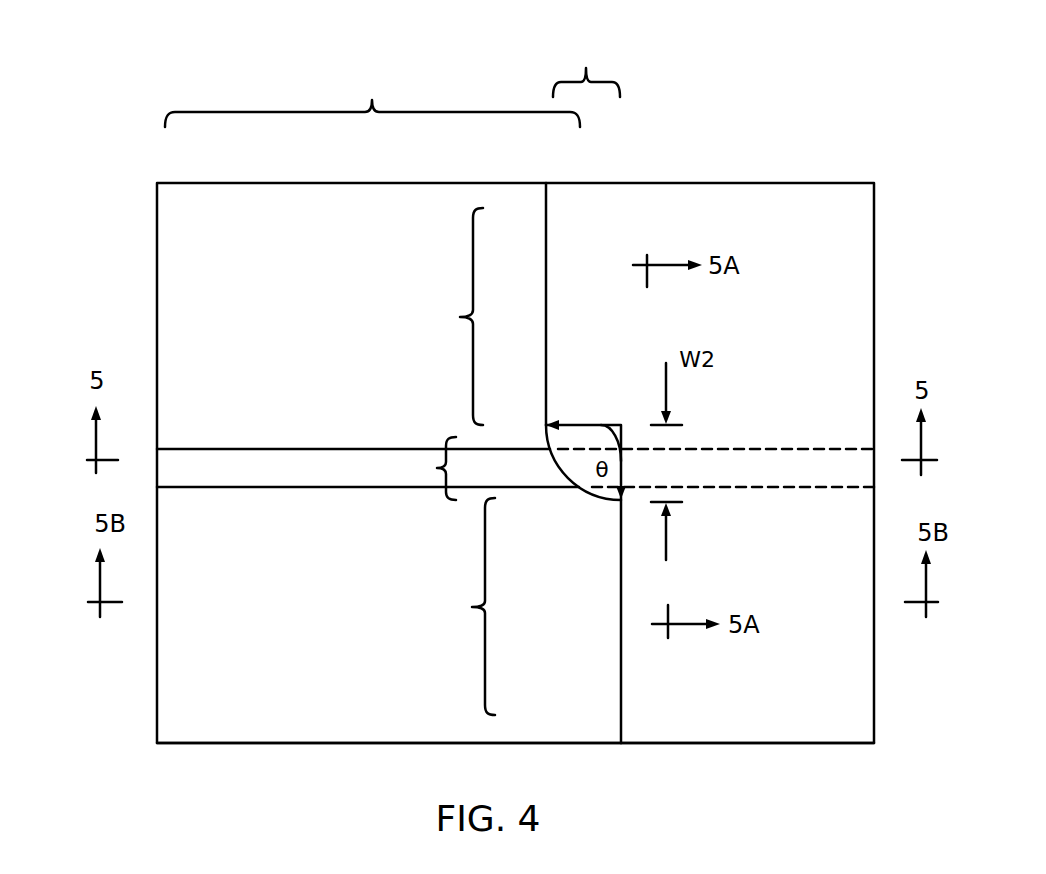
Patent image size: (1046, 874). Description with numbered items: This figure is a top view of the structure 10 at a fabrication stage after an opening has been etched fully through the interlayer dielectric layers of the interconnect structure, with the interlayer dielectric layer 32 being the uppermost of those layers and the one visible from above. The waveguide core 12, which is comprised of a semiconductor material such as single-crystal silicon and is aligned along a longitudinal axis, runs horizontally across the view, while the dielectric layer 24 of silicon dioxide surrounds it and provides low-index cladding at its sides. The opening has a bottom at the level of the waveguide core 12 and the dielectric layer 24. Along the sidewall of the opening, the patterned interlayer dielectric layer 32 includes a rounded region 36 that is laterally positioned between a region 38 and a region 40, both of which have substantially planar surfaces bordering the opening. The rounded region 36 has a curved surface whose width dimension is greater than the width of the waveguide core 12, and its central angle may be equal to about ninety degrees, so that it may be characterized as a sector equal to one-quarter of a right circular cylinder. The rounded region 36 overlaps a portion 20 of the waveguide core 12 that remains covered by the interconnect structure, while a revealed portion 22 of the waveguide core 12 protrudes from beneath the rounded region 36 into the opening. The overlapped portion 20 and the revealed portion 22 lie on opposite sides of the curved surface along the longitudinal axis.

The structure 10 is at (160, 155).
The waveguide core 12 is at (284, 475).
The overlapped portion of the waveguide core 20 is at (586, 390).
The revealed portion of the waveguide core 22 is at (372, 244).
The dielectric layer 24 is at (275, 723).
The interlayer dielectric layer 32 is at (820, 723).
The rounded region 36 is at (428, 468).
The region 38 is at (466, 606).
The region 40 is at (455, 316).